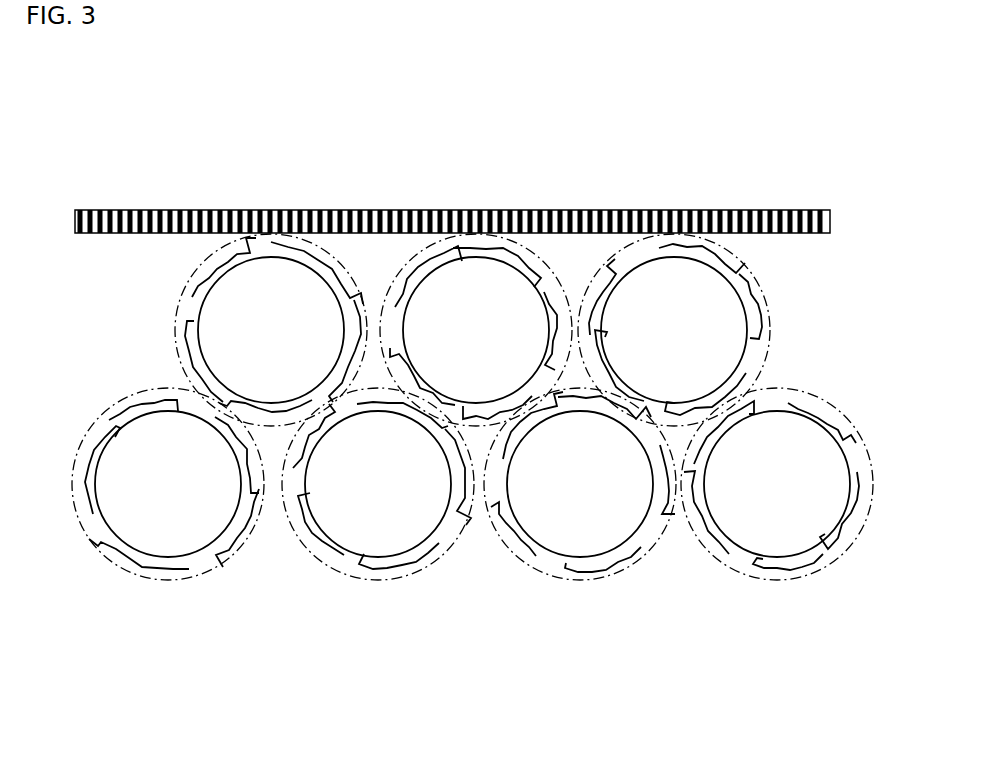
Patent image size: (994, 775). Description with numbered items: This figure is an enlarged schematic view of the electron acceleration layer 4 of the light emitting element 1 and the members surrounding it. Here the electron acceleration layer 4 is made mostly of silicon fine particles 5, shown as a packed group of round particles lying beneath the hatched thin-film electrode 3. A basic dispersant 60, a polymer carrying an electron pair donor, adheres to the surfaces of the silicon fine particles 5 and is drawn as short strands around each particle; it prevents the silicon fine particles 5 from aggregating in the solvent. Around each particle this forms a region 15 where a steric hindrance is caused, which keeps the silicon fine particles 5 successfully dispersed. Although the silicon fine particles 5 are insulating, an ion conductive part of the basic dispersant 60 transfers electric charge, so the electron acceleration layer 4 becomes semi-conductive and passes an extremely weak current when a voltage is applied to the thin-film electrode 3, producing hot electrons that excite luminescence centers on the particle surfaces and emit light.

The light emitting element 1 is at (398, 130).
The thin-film electrode 3 is at (762, 211).
The electron acceleration layer 4 is at (870, 233).
The silicon fine particles 5 is at (253, 276).
The basic dispersant 60 is at (307, 262).
The region where a steric hindrance is caused 15 is at (522, 251).